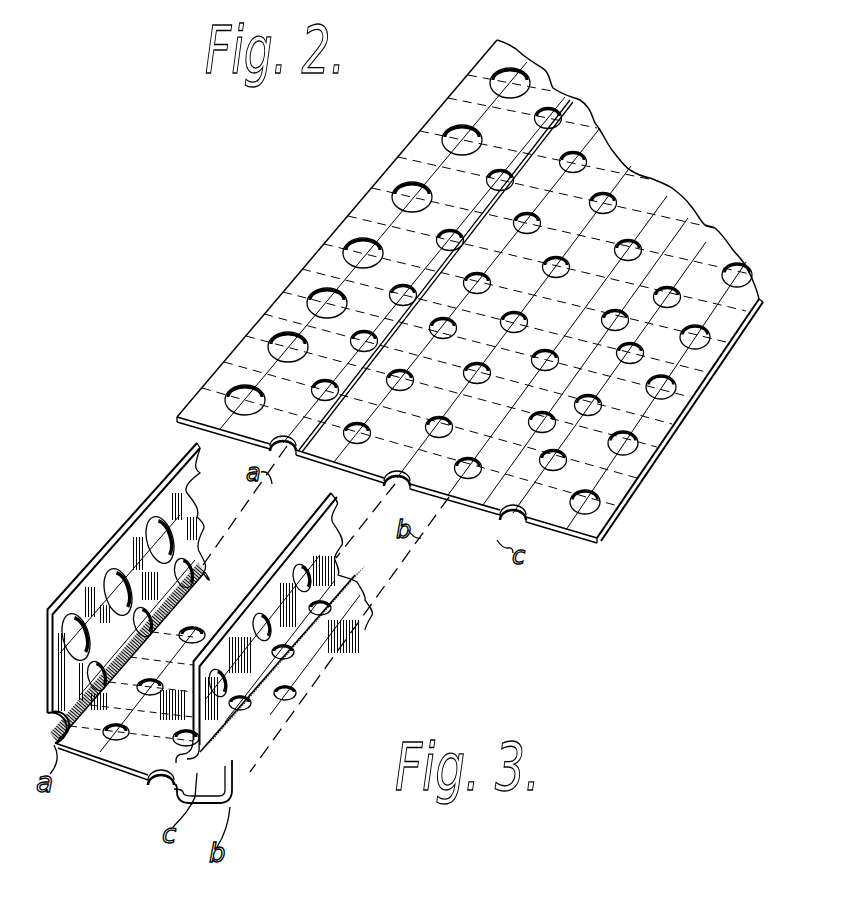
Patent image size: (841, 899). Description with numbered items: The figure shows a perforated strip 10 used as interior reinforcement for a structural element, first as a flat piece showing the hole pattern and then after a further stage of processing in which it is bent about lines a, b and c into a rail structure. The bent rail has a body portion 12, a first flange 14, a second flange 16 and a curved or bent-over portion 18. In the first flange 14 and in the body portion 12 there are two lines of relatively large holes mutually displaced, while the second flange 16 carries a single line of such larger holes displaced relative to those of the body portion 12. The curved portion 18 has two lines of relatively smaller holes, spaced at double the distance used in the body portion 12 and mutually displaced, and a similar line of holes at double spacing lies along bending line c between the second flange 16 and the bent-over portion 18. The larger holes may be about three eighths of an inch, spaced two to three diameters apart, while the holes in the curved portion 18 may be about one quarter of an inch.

In FIG. 2, the strip 10 is at (370, 208).
In FIG. 3, the body portion 12 is at (130, 767).
In FIG. 3, the first flange 14 is at (108, 563).
In FIG. 3, the second flange 16 is at (308, 543).
In FIG. 3, the curved or bent-over portion 18 is at (248, 733).